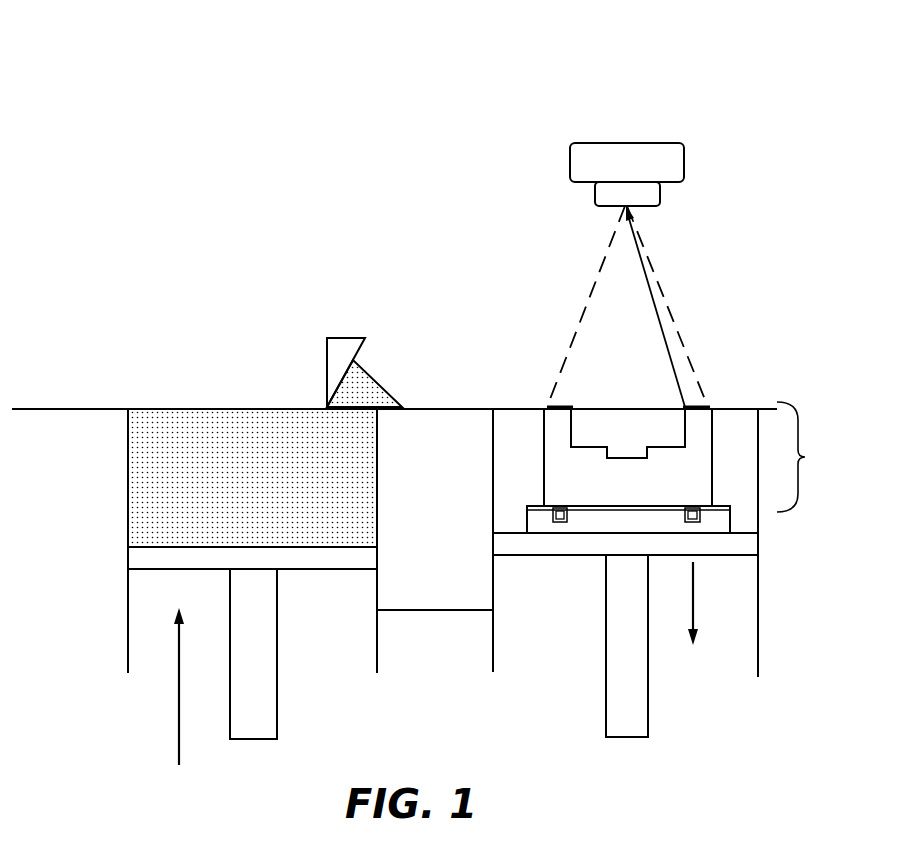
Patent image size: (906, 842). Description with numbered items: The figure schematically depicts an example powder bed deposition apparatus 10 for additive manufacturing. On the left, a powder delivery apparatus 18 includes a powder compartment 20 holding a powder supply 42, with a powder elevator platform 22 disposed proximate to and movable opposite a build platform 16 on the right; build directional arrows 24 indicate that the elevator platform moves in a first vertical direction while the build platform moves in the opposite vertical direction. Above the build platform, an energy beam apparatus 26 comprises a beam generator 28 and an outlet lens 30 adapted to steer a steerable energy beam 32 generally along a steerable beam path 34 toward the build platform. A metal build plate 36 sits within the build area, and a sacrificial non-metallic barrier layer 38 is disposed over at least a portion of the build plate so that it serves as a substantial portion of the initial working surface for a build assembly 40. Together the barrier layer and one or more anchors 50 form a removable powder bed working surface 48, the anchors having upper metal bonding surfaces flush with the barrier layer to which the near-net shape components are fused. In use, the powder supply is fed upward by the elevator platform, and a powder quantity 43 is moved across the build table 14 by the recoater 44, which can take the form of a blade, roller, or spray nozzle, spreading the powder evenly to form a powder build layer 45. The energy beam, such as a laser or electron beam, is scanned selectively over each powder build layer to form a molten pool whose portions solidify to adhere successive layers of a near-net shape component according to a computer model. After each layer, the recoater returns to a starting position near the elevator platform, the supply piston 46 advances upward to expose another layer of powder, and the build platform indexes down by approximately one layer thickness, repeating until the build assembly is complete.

The powder bed deposition apparatus 10 is at (641, 113).
The build table 14 is at (32, 380).
The build platform 16 is at (625, 529).
The powder delivery apparatus 18 is at (274, 293).
The powder compartment 20 is at (193, 400).
The powder elevator platform 22 is at (352, 592).
The build directional arrows 24 is at (179, 715).
The energy beam apparatus 26 is at (614, 156).
The beam generator 28 is at (684, 162).
The outlet lens 30 is at (660, 198).
The steerable energy beam 32 is at (657, 313).
The steerable beam path 34 is at (563, 352).
The metal build plate 36 is at (588, 523).
The non-metallic barrier layer 38 is at (625, 538).
The build assembly 40 is at (805, 457).
The powder supply 42 is at (205, 468).
The powder quantity 43 is at (378, 378).
The recoater 44 is at (340, 348).
The powder build layer 45 is at (683, 406).
The supply piston 46 is at (230, 601).
The removable powder bed working surface 48 is at (728, 500).
The anchors 50 is at (550, 522).